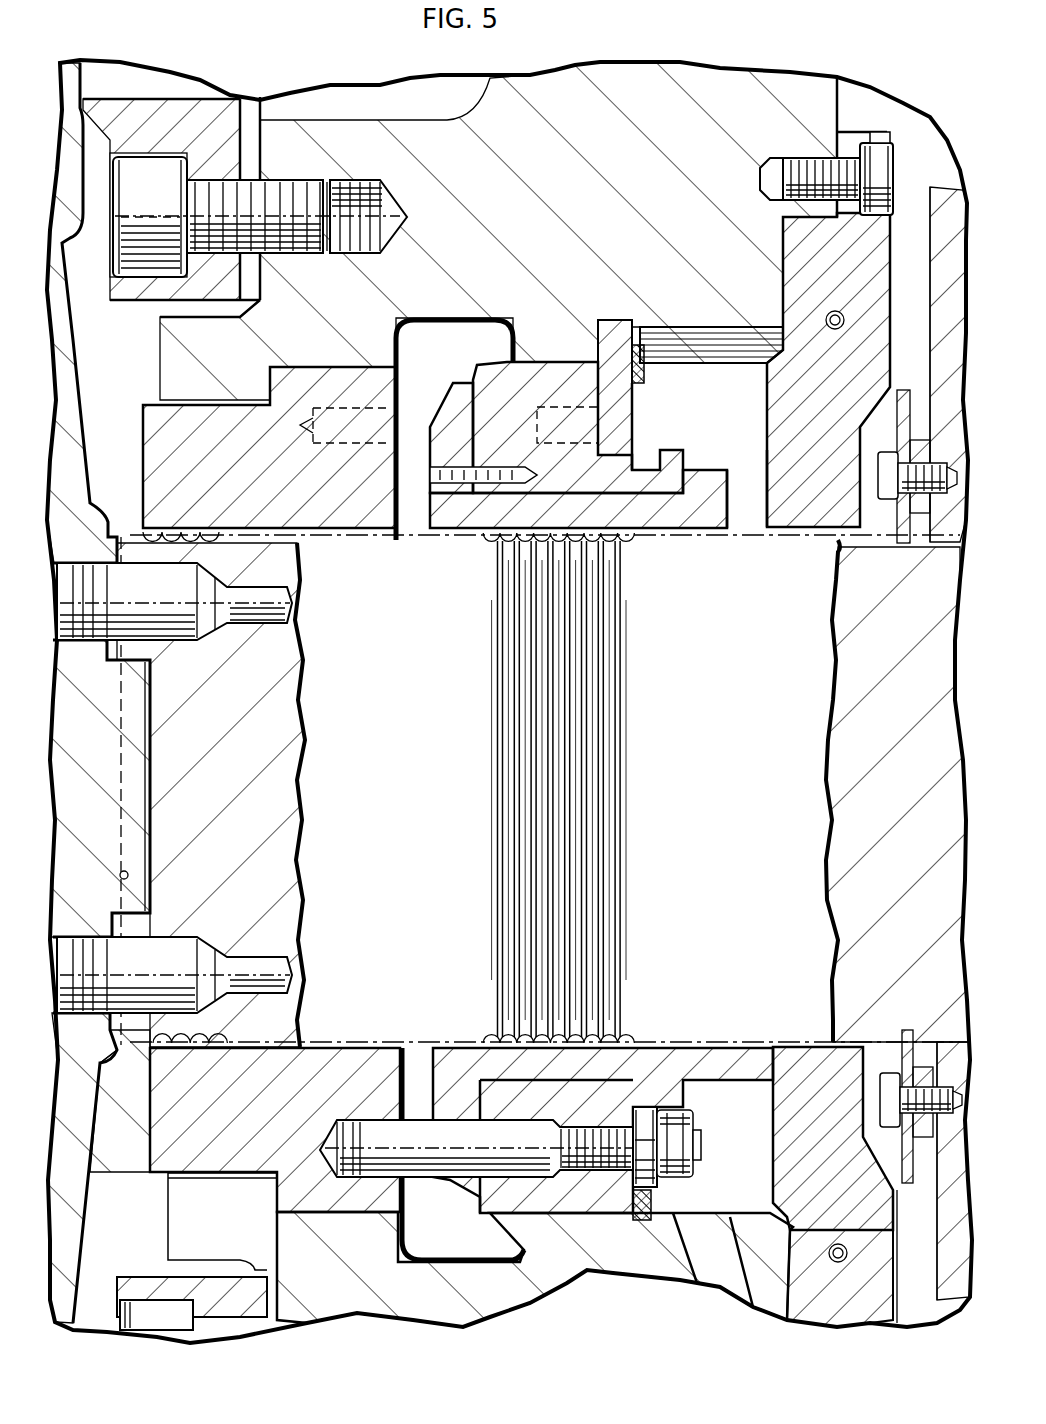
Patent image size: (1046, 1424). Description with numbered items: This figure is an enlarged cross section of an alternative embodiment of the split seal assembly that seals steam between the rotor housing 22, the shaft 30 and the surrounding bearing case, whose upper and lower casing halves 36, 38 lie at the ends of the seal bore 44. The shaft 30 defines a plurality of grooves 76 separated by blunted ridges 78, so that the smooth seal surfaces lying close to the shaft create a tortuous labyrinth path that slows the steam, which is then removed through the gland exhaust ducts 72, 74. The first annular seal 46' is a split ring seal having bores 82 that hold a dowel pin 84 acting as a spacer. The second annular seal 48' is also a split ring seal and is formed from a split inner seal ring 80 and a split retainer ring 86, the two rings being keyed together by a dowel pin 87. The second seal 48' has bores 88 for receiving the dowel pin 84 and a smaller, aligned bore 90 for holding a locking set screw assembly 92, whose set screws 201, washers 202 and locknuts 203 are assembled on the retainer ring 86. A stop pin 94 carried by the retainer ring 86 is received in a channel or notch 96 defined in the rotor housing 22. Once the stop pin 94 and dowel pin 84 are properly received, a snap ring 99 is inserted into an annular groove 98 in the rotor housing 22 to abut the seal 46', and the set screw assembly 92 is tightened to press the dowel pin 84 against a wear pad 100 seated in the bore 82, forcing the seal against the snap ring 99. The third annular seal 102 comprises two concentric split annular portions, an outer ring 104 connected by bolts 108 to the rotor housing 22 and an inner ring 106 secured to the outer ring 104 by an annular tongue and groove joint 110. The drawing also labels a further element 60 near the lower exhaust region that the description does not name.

The rotor housing 22 is at (612, 85).
The shaft 30 is at (163, 805).
The upper casing half 36 is at (943, 214).
The lower casing half 38 is at (955, 1278).
The seal or shaft bore 44 is at (119, 876).
The first annular seal 46' is at (269, 477).
The second annular seal 48' is at (578, 528).
The retainer 60 is at (280, 1179).
The gland exhaust duct 72 is at (412, 1233).
The gland exhaust duct 74 is at (718, 1289).
The grooves 76 is at (536, 788).
The blunted ridges 78 is at (497, 542).
The split inner seal ring 80 is at (457, 517).
The bores 82 is at (352, 1176).
The dowel pin 84 is at (416, 1131).
The split retainer ring 86 is at (485, 378).
The dowel pin 87 is at (443, 480).
The bores 88 is at (603, 1162).
The aligned bore 90 is at (607, 1186).
The locking set screw assembly 92 is at (592, 1116).
The stop pin 94 is at (605, 322).
The channel or notch 96 is at (717, 325).
The annular groove 98 is at (652, 1206).
The snap ring 99 is at (648, 373).
The wear pad 100 is at (349, 1119).
The third annular seal 102 is at (800, 1014).
The outer ring 104 is at (880, 269).
The inner ring 106 is at (785, 532).
The bolts 108 is at (873, 160).
The annular tongue and groove joint 110 is at (832, 314).
The set screws 201 is at (700, 1129).
The washers 202 is at (652, 1119).
The locknuts 203 is at (700, 1144).